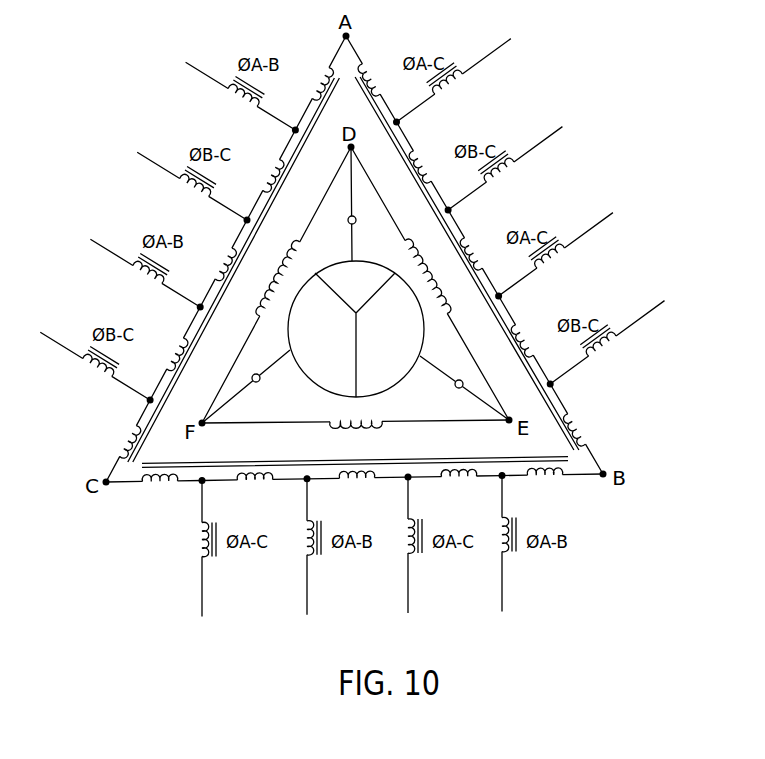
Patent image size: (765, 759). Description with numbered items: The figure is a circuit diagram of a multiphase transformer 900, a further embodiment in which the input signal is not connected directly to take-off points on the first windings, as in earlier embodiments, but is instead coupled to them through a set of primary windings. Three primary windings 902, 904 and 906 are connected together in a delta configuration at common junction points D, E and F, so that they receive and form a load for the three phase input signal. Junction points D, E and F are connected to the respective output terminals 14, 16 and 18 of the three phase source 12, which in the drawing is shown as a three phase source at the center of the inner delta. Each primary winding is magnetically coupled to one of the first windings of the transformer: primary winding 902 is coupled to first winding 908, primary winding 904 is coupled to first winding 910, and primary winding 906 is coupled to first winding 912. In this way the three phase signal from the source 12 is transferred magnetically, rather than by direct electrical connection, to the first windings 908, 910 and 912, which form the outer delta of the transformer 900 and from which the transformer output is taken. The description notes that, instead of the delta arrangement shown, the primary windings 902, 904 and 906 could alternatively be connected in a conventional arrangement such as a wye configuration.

The source 12 is at (396, 386).
The output terminal 14 is at (356, 221).
The output terminal 16 is at (456, 378).
The output terminal 18 is at (259, 381).
The multiphase transformer 900 is at (390, 271).
The primary winding 902 is at (412, 250).
The primary winding 904 is at (382, 430).
The primary winding 906 is at (291, 250).
The first winding 908 is at (535, 292).
The first winding 910 is at (538, 495).
The first winding 912 is at (224, 265).